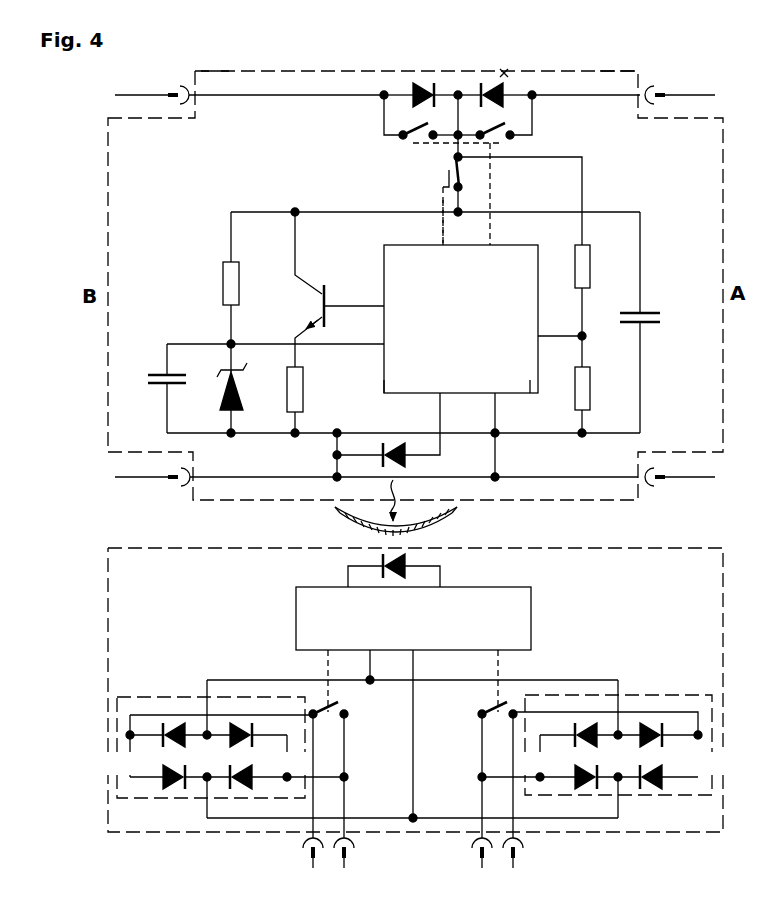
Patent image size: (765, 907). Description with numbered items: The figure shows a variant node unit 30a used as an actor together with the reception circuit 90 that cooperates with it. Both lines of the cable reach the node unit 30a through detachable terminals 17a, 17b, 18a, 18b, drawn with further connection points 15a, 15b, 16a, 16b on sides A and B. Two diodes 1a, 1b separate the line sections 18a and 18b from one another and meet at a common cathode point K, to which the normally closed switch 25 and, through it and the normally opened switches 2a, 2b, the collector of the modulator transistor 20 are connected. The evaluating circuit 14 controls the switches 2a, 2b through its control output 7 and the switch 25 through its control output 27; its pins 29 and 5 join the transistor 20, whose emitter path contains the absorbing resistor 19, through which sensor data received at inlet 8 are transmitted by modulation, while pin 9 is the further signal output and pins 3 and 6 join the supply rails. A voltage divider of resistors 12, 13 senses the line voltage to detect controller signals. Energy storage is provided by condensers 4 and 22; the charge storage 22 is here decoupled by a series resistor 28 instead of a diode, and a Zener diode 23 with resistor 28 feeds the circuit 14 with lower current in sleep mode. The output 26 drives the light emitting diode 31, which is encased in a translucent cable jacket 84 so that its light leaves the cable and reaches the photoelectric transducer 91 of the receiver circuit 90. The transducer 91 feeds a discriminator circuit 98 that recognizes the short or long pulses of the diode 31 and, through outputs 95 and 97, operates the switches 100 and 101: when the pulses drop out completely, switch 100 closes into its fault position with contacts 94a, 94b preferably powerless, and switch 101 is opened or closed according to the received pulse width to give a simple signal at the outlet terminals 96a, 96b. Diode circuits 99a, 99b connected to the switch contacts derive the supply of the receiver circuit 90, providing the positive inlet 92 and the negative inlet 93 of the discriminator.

The diode 1a is at (463, 46).
The diode 1b is at (423, 80).
The cathode point K is at (455, 88).
The normally open switch 2a is at (508, 150).
The normally open switch 2b is at (407, 150).
The condenser 4 is at (646, 304).
The voltage divider resistor 12 is at (598, 386).
The voltage divider resistor 13 is at (598, 292).
The evaluating circuit 14 is at (546, 244).
The terminal 15a is at (648, 73).
The terminal 15b is at (181, 76).
The terminal 16a is at (519, 465).
The terminal 16b is at (295, 467).
The detachable terminal 17a is at (680, 488).
The detachable terminal 17b is at (152, 488).
The detachable terminal 18a is at (623, 87).
The detachable terminal 18b is at (249, 89).
The absorbing resistor 19 is at (279, 388).
The modulator transistor 20 is at (298, 278).
The condenser 22 is at (162, 388).
The Zener diode 23 is at (218, 388).
The normally closed switch 25 is at (440, 182).
The series resistor 28 is at (215, 280).
The node unit 30a is at (118, 112).
The light emitting diode 31 is at (416, 463).
The translucent cable jacket 84 is at (331, 523).
The receiver circuit 90 is at (118, 545).
The photoelectric transducer 91 is at (416, 558).
The discriminator circuit 98 is at (511, 585).
The diode circuit 99a is at (190, 694).
The diode circuit 99b is at (639, 691).
The switch 100 is at (323, 721).
The switch 101 is at (504, 721).
The contact 94a is at (294, 848).
The contact 94b is at (356, 852).
The outlet terminal 96a is at (479, 851).
The outlet terminal 96b is at (521, 851).
The control output 27 is at (447, 238).
The control output 7 is at (491, 210).
The output 29 is at (369, 306).
The connection 5 is at (285, 344).
The inlet 8 is at (393, 381).
The output 26 is at (427, 412).
The connection 6 is at (496, 423).
The signal output 9 is at (525, 381).
The connection 3 is at (551, 337).
The switch control output 95 is at (328, 670).
The negative inlet 93 is at (369, 656).
The positive inlet 92 is at (414, 725).
The switch control output 97 is at (498, 670).